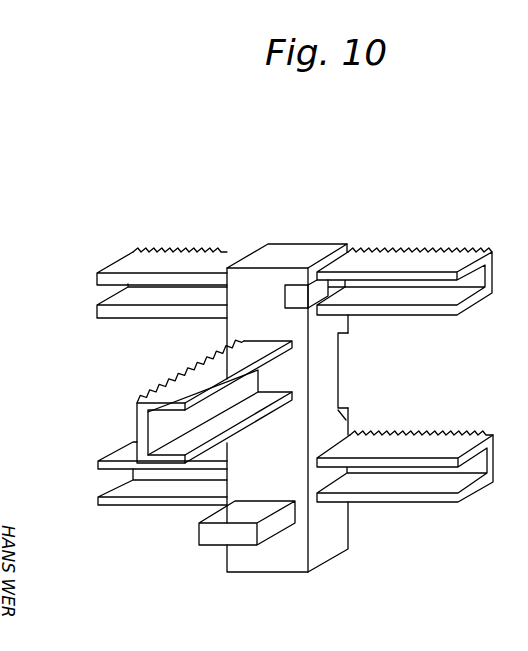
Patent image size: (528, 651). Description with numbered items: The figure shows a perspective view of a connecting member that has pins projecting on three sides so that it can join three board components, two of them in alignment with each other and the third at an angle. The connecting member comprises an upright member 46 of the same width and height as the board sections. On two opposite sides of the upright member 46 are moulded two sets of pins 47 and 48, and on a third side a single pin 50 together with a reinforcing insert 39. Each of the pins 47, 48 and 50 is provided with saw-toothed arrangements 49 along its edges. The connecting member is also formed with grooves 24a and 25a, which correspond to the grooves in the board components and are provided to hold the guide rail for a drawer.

The upright member 46 is at (328, 378).
The groove 24a is at (338, 385).
The groove 25a is at (295, 290).
The set of pins 47 is at (205, 262).
The set of pins 48 is at (128, 450).
The saw-toothed arrangements 49 is at (212, 252).
The pin 50 is at (157, 427).
The reinforcing insert 39 is at (218, 515).